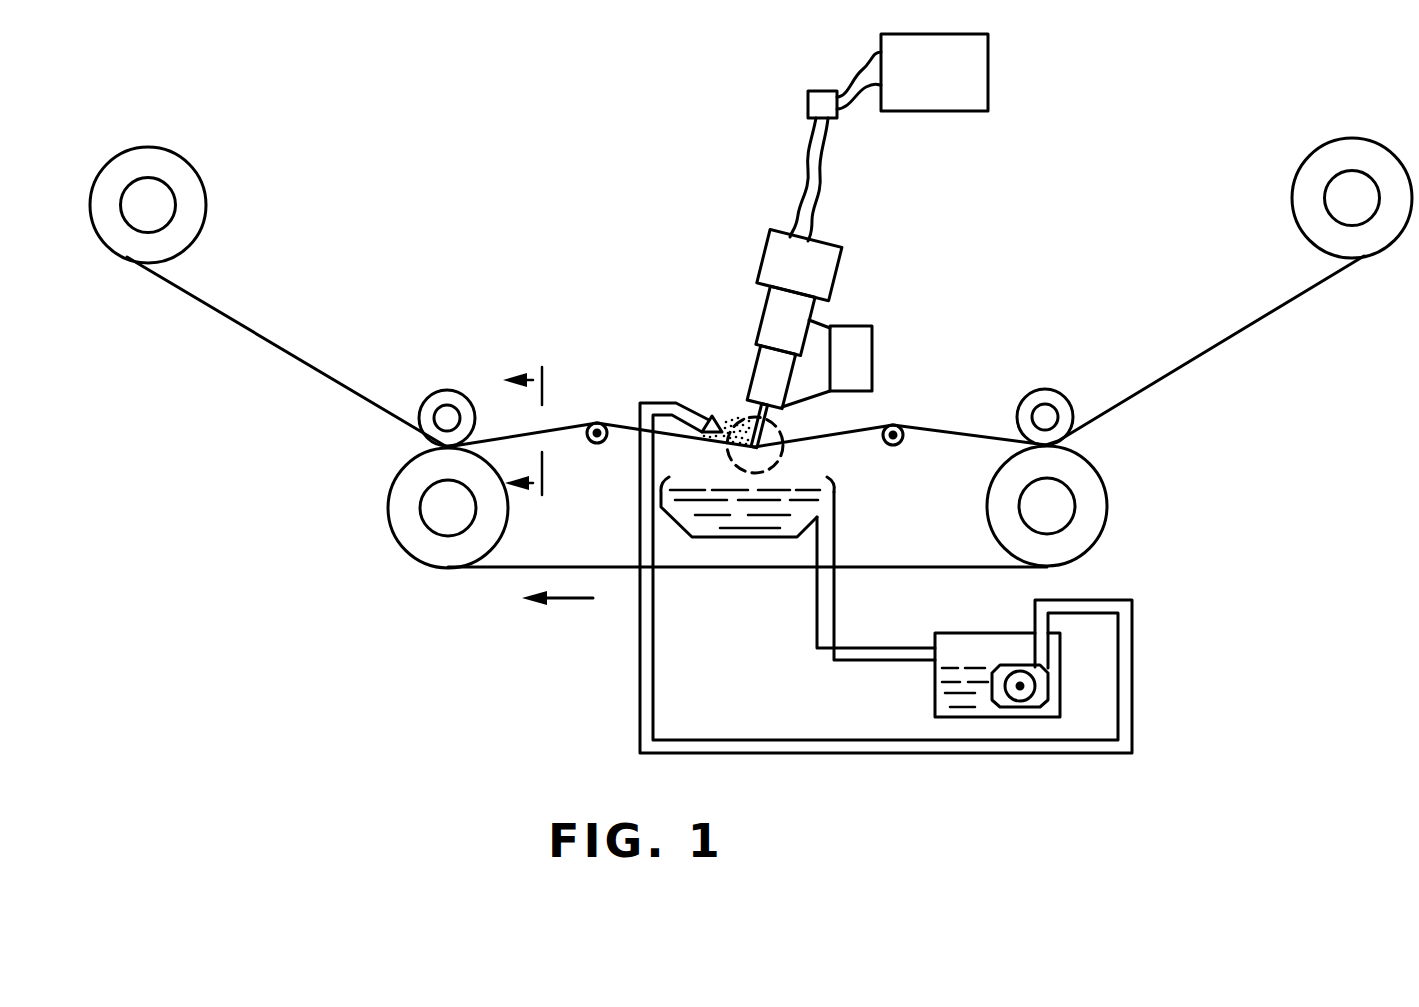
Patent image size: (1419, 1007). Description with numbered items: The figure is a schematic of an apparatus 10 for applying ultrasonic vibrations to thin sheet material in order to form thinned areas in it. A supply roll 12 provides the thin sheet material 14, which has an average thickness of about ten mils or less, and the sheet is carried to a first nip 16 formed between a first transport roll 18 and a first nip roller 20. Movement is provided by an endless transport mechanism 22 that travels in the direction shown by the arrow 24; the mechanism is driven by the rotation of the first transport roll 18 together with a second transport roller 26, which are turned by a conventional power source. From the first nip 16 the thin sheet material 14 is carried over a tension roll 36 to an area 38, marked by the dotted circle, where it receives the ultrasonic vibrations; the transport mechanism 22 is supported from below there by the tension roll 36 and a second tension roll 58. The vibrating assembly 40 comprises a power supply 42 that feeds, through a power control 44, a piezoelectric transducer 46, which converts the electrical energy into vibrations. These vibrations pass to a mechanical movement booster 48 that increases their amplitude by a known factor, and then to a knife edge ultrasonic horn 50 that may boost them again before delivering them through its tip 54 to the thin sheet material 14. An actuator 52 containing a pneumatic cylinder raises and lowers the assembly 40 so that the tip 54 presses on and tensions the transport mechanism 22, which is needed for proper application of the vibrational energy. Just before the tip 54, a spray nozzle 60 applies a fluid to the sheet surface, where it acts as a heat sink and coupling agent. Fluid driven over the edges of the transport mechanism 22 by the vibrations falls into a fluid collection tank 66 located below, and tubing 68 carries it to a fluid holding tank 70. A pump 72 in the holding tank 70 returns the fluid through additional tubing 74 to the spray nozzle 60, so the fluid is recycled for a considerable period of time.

The apparatus 10 is at (493, 170).
The supply roll 12 is at (198, 170).
The thin sheet material 14 is at (228, 315).
The first nip 16 is at (398, 392).
The first transport roll 18 is at (396, 512).
The first nip roller 20 is at (448, 390).
The endless transport mechanism 22 is at (510, 568).
The arrow 24 is at (580, 599).
The second transport roller 26 is at (1104, 484).
The tension roll 36 is at (598, 422).
The area 38 is at (795, 460).
The assembly 40 is at (886, 250).
The power supply 42 is at (988, 63).
The power control 44 is at (808, 108).
The piezoelectric transducer 46 is at (833, 242).
The mechanical movement booster 48 is at (762, 313).
The knife edge ultrasonic horn 50 is at (757, 358).
The actuator 52 is at (868, 325).
The tip 54 is at (738, 430).
The second tension roll 58 is at (898, 426).
The spray nozzle 60 is at (709, 414).
The fluid collection tank 66 is at (735, 541).
The tubing 68 is at (834, 602).
The fluid holding tank 70 is at (953, 686).
The pump 72 is at (1050, 676).
The additional tubing 74 is at (820, 755).